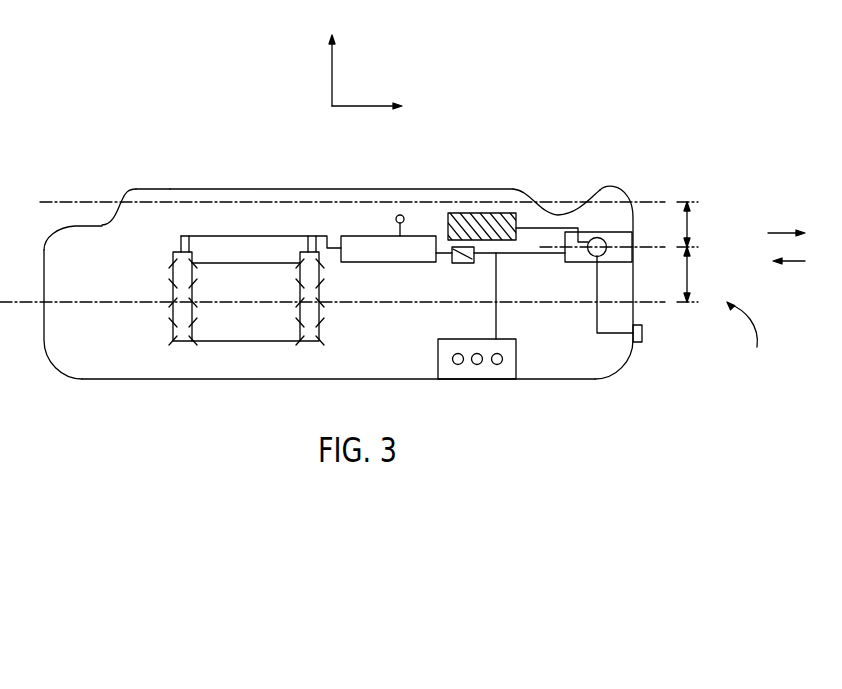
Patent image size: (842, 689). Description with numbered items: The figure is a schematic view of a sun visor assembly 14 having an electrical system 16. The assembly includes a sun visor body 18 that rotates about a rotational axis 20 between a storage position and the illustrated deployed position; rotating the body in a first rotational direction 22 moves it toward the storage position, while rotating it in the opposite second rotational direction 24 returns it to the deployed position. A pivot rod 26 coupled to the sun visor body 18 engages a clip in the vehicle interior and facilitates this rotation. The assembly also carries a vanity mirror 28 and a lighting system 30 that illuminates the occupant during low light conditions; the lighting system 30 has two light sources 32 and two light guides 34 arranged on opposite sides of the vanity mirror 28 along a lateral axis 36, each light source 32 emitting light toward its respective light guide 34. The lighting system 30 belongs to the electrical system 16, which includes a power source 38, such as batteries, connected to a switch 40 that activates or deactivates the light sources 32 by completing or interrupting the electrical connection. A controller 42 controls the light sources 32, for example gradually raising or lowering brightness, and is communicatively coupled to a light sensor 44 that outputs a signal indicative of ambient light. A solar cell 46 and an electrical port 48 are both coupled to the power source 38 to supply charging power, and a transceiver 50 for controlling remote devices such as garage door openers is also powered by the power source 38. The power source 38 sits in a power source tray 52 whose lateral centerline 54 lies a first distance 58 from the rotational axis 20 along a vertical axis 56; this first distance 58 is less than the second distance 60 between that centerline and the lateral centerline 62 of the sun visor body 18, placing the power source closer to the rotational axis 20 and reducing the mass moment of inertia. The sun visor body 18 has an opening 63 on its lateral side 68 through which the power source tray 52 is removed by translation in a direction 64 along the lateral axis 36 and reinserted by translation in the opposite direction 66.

The sun visor assembly 14 is at (396, 176).
The electrical system 16 is at (548, 332).
The sun visor body 18 is at (157, 380).
The rotational axis 20 is at (70, 201).
The first rotational direction 22 is at (140, 227).
The second rotational direction 24 is at (166, 230).
The pivot rod 26 is at (562, 200).
The vanity mirror 28 is at (250, 342).
The lighting system 30 is at (160, 279).
The light source 32 is at (186, 256).
The light guide 34 is at (172, 332).
The lateral axis 36 is at (365, 106).
The power source 38 is at (598, 237).
The switch 40 is at (463, 264).
The controller 42 is at (388, 263).
The light sensor 44 is at (395, 219).
The solar cell 46 is at (484, 213).
The electrical port 48 is at (643, 335).
The transceiver 50 is at (480, 339).
The power source tray 52 is at (580, 263).
The lateral centerline of the power source tray 54 is at (652, 246).
The vertical axis 56 is at (331, 77).
The first distance 58 is at (688, 224).
The second distance 60 is at (688, 272).
The lateral centerline of the sun visor body 62 is at (650, 303).
The opening 63 is at (646, 259).
The direction 64 is at (783, 233).
The direction 66 is at (793, 262).
The lateral side 68 is at (746, 336).